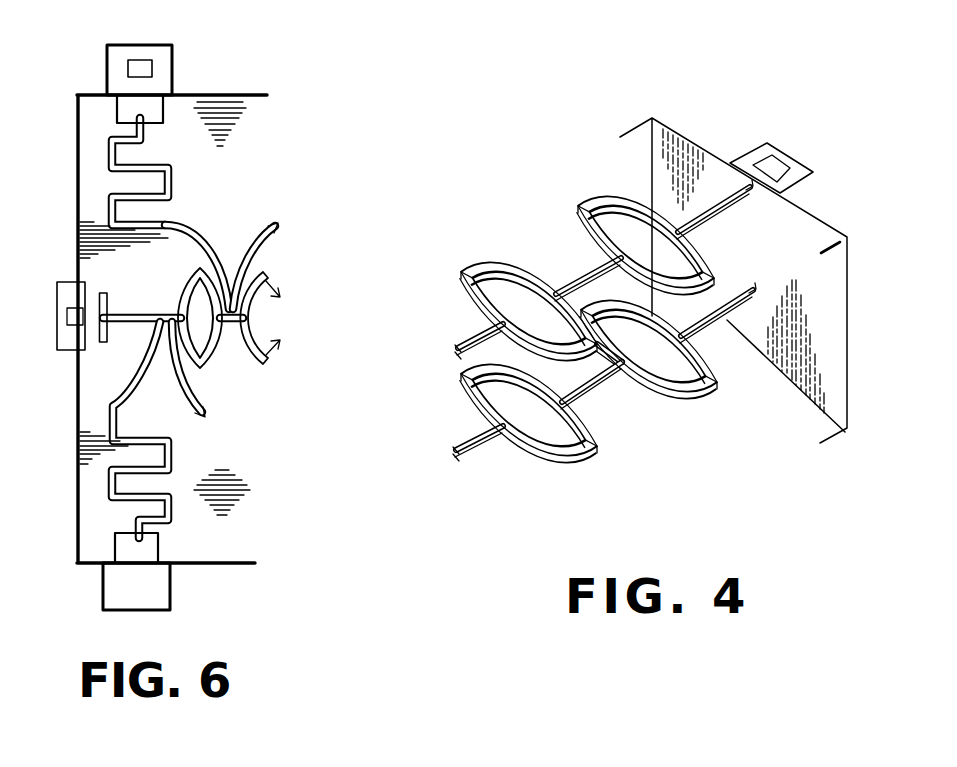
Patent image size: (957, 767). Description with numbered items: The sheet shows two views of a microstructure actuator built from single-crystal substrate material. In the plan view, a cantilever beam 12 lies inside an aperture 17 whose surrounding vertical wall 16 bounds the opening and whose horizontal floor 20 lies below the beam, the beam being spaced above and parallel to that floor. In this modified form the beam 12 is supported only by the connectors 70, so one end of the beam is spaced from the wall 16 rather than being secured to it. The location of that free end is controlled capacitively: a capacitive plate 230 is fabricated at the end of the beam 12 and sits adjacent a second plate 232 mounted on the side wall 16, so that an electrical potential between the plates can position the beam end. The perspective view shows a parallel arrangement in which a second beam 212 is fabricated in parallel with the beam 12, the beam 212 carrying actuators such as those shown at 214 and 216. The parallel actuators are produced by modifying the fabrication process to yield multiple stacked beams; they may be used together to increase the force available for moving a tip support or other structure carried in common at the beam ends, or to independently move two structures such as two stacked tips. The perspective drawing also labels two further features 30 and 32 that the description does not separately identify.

In FIG. 6, the cantilever beam 12 is at (133, 313).
In FIG. 4, the cantilever beam 12 is at (580, 273).
In FIG. 6, the vertical wall 16 is at (77, 503).
In FIG. 4, the vertical wall 16 is at (808, 246).
In FIG. 6, the aperture 17 is at (220, 128).
In FIG. 6, the horizontal floor 20 is at (245, 458).
In FIG. 4, the lens-shaped resonator element 30 is at (466, 310).
In FIG. 4, the second lens-shaped resonator element 32 is at (605, 196).
In FIG. 6, the connectors 70 is at (205, 246).
In FIG. 4, the beam 212 is at (613, 378).
In FIG. 4, the actuator 214 is at (602, 442).
In FIG. 4, the actuator 216 is at (722, 378).
In FIG. 6, the capacitive plate 230 is at (108, 292).
In FIG. 6, the second plate 232 is at (86, 352).